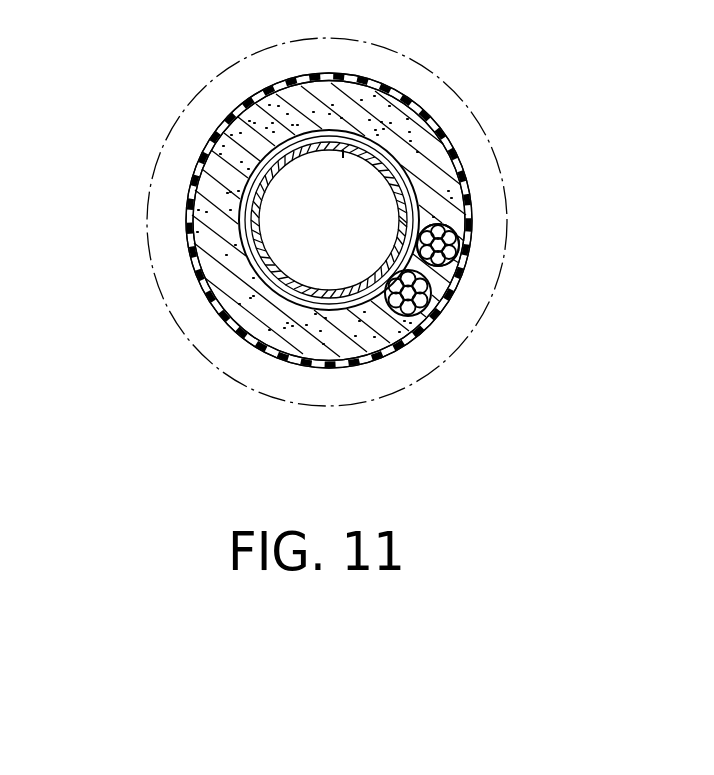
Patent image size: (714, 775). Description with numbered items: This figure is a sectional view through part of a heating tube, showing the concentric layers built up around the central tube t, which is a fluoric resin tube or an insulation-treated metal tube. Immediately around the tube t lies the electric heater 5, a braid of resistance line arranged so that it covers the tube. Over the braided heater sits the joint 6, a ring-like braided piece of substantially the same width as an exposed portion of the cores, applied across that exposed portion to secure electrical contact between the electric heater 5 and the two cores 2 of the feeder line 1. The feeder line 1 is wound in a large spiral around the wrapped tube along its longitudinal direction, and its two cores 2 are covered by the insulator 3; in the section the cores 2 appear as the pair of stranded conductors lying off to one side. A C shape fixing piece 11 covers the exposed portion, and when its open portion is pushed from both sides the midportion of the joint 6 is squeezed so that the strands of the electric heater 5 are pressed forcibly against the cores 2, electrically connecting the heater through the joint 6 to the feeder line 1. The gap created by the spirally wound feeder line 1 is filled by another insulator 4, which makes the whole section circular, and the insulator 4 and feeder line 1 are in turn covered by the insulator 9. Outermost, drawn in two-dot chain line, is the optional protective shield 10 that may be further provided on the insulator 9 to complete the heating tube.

The feeder line 1 is at (471, 262).
The cores 2 is at (453, 270).
The insulator 3 is at (461, 238).
The insulator 4 is at (348, 368).
The electric heater 5 is at (243, 268).
The joint 6 is at (303, 316).
The insulator 9 is at (458, 160).
The shield 10 is at (150, 211).
The C shape fixing piece 11 is at (411, 328).
The central tube t is at (341, 160).